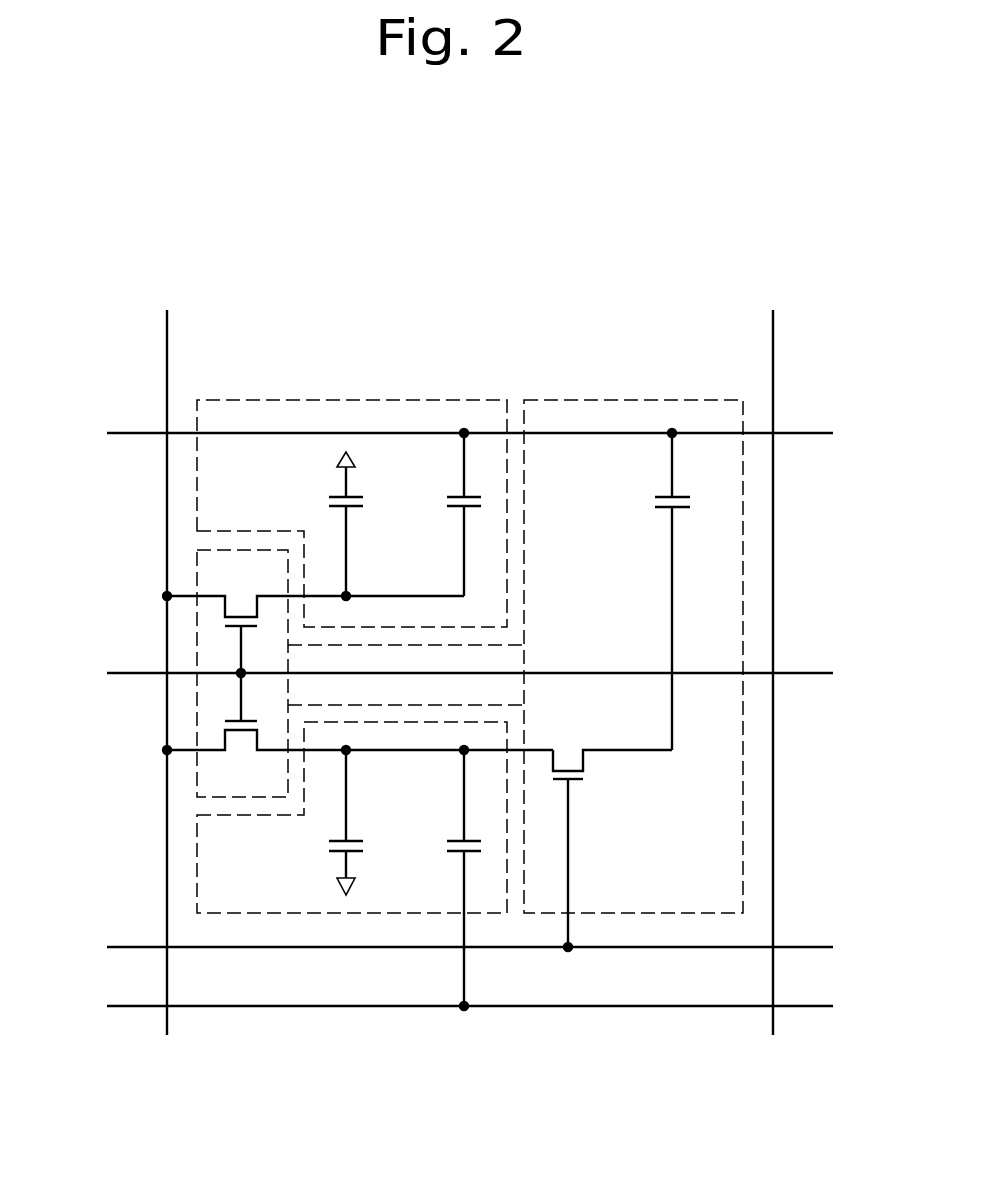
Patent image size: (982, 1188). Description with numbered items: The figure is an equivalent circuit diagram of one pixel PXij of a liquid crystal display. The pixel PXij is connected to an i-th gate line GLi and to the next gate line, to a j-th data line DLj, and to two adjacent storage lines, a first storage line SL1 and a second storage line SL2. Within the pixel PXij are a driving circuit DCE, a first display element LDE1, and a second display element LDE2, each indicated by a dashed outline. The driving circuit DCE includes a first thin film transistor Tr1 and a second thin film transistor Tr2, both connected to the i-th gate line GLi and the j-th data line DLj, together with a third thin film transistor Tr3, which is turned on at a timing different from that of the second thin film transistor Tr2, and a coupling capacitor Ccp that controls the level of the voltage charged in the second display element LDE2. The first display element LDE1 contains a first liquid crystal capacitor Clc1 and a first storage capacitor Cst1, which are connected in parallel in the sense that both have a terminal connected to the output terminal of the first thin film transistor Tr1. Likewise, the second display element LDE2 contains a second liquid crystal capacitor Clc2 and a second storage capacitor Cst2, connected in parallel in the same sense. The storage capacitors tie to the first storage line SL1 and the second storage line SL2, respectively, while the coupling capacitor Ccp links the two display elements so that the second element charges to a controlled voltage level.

The pixel PXij is at (694, 245).
The j-th data line DLj is at (164, 657).
The first storage line SL1 is at (445, 433).
The second storage line SL2 is at (446, 1006).
The i-th gate line GLi is at (445, 674).
The first display element LDE1 is at (407, 400).
The second display element LDE2 is at (197, 862).
The driving circuit DCE is at (617, 400).
The first thin film transistor Tr1 is at (313, 618).
The second thin film transistor Tr2 is at (358, 728).
The third thin film transistor Tr3 is at (609, 834).
The first liquid crystal capacitor Clc1 is at (315, 526).
The second liquid crystal capacitor Clc2 is at (316, 820).
The first storage capacitor Cst1 is at (434, 512).
The second storage capacitor Cst2 is at (434, 878).
The coupling capacitor Ccp is at (647, 589).